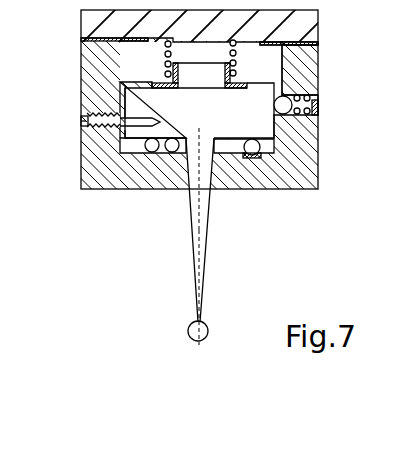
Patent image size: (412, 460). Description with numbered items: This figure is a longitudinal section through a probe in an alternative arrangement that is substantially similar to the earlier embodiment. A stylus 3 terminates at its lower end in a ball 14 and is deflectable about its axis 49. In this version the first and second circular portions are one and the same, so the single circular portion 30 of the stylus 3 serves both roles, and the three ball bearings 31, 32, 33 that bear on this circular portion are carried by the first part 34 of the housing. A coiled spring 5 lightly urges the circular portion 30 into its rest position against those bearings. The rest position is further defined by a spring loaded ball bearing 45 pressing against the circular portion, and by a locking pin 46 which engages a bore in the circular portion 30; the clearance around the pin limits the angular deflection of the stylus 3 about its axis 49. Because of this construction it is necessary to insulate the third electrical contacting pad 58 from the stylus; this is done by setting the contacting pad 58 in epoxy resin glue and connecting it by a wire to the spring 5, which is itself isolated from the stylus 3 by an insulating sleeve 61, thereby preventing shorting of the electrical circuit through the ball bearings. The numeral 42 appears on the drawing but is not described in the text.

The stylus 3 is at (213, 213).
The coiled spring 5 is at (236, 43).
The ball 14 is at (209, 328).
The first circular portion 30 is at (121, 92).
The ball bearing (electrical contact) 31 is at (152, 153).
The ball bearing (electrical contact) 32 is at (172, 153).
The ball bearing (electrical contact) 33 is at (256, 160).
The first part of the housing 34 is at (302, 163).
The seal 42 is at (82, 113).
The spring loaded ball bearing 45 is at (305, 140).
The locking pin 46 is at (82, 122).
The axis 49 is at (199, 270).
The third electrical contacting pad 58 is at (296, 190).
The insulating sleeve 61 is at (248, 85).